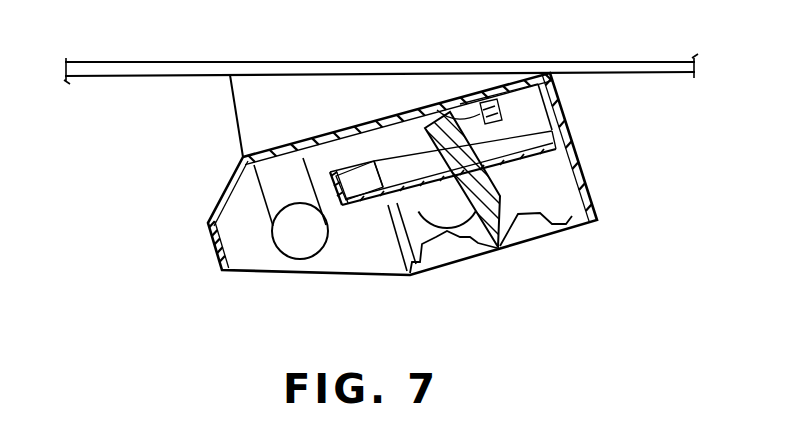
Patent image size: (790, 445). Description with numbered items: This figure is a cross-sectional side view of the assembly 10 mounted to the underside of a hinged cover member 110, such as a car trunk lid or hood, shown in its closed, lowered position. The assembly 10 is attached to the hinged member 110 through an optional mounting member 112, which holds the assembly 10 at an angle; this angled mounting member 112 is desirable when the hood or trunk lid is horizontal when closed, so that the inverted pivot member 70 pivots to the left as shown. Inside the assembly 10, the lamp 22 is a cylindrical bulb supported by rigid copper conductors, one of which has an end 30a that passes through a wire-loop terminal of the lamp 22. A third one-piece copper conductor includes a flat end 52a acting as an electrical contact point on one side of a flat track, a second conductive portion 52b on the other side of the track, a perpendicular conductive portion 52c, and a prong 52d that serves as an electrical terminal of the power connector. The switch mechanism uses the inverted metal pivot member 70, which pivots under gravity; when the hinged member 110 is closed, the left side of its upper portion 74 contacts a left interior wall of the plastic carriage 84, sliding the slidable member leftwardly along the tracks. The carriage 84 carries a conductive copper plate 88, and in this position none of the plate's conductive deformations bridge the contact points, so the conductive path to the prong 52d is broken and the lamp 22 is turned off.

The assembly 10 is at (168, 253).
The lamp 22 is at (314, 259).
The end of conductor 30a is at (278, 195).
The flat end 52a is at (522, 133).
The second conductive portion 52b is at (365, 206).
The conductive portion 52c is at (331, 178).
The prong 52d is at (352, 178).
The inverted pivot member 70 is at (491, 224).
The upper portion 74 is at (438, 128).
The plastic carriage 84 is at (477, 122).
The conductive copper plate 88 is at (557, 117).
The hinged cover member 110 is at (176, 62).
The mounting member 112 is at (250, 107).